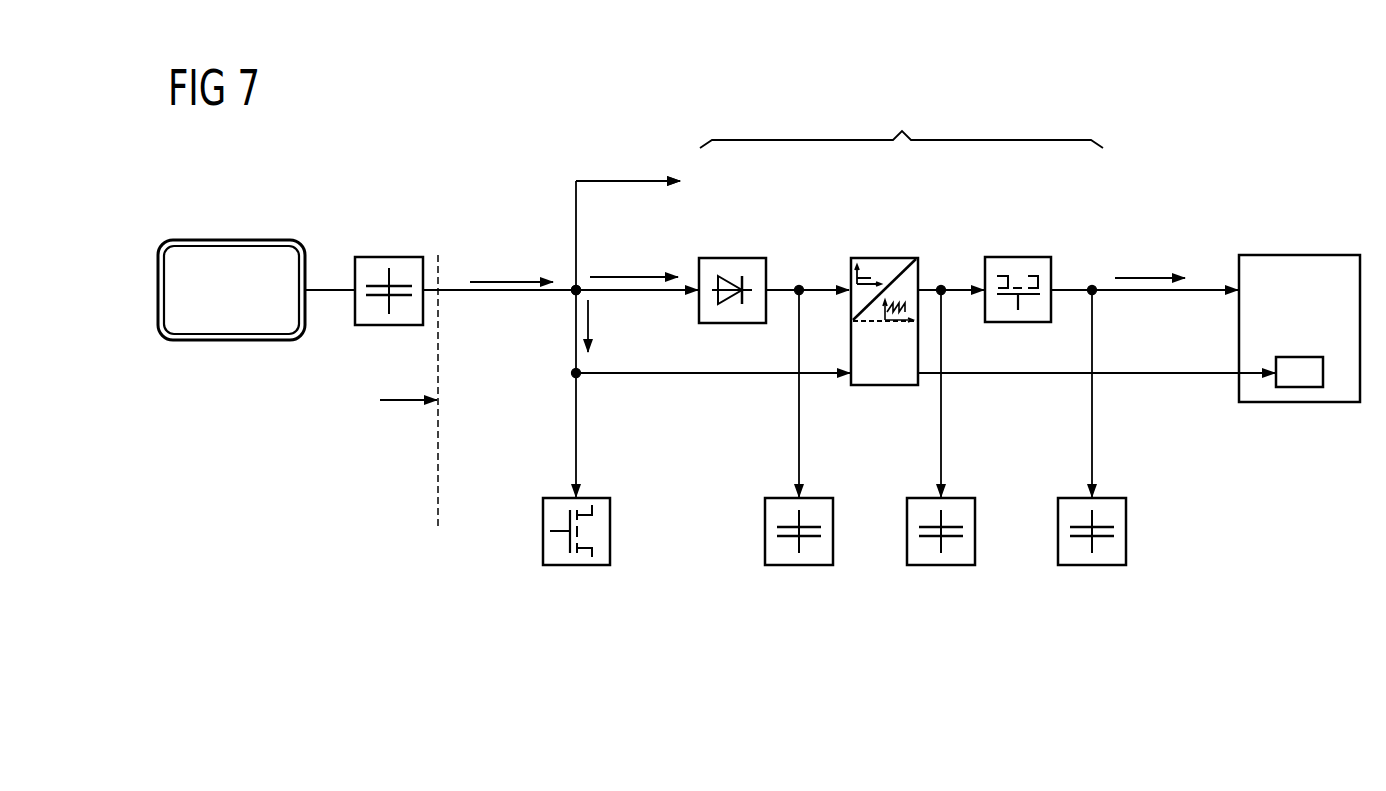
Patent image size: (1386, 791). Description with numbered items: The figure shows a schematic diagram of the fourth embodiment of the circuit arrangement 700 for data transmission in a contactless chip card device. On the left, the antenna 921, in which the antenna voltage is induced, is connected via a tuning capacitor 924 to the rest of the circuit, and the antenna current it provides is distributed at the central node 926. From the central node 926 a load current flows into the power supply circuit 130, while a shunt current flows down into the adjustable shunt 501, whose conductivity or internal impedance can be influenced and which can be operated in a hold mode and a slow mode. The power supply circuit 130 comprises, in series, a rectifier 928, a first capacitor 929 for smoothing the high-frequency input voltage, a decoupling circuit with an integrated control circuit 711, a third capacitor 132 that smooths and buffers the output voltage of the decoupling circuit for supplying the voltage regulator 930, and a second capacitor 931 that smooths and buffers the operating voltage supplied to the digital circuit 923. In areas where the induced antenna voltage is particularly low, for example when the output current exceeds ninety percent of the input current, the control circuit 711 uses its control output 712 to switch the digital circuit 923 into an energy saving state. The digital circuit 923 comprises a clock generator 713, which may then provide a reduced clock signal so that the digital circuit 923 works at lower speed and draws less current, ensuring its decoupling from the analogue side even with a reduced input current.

The circuit arrangement 700 is at (1206, 146).
The power supply circuit 130 is at (901, 117).
The antenna 921 is at (240, 240).
The tuning capacitor 924 is at (396, 257).
The central node 926 is at (574, 288).
The digital circuit 923 is at (599, 180).
The clock generator 713 is at (1296, 357).
The control output 712 is at (1170, 378).
The rectifier 928 is at (733, 258).
The control circuit 711 is at (885, 258).
The voltage regulator 930 is at (1018, 257).
The adjustable shunt 501 is at (575, 567).
The first capacitor 929 is at (799, 567).
The third capacitor 132 is at (941, 567).
The second capacitor 931 is at (1092, 567).